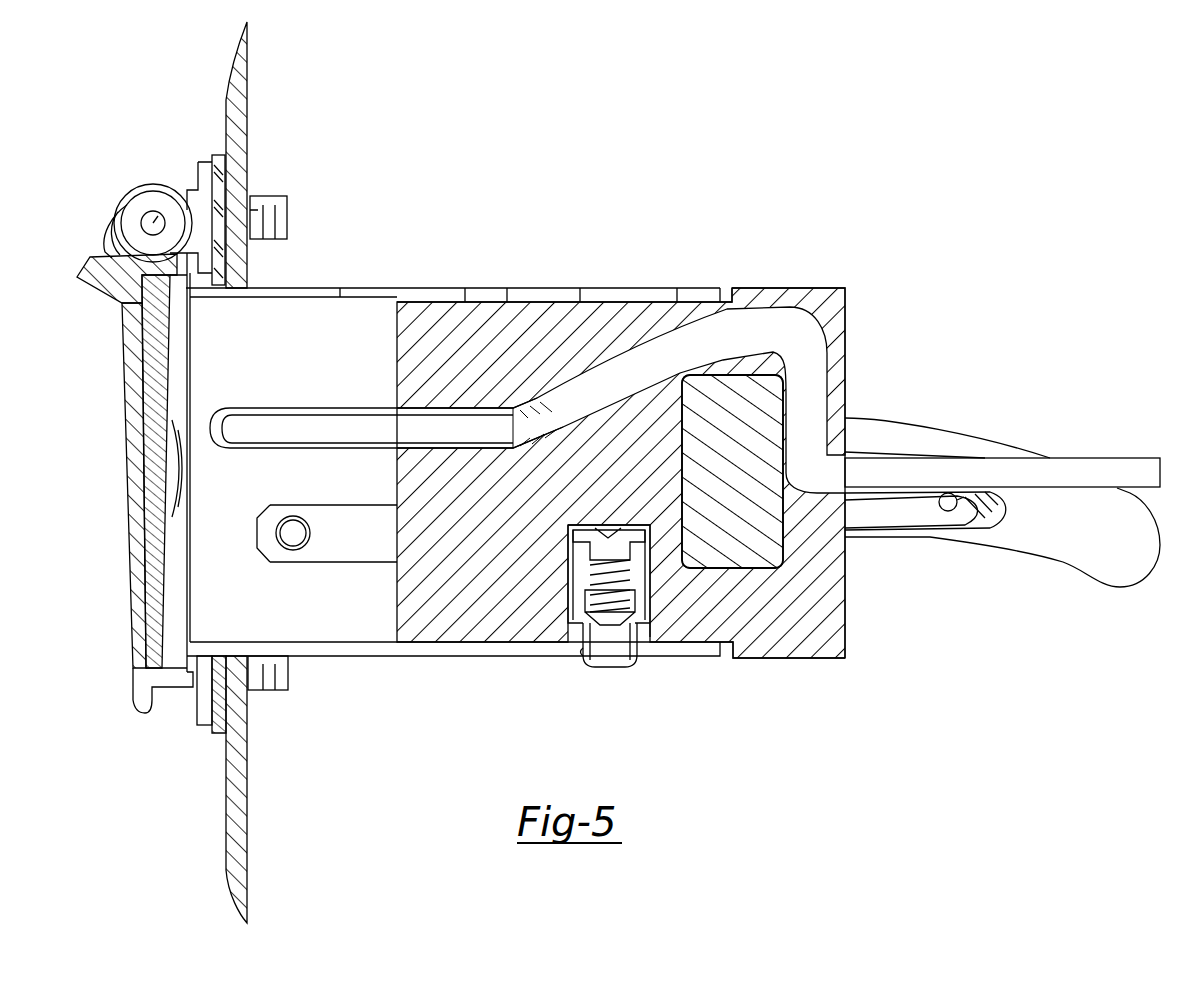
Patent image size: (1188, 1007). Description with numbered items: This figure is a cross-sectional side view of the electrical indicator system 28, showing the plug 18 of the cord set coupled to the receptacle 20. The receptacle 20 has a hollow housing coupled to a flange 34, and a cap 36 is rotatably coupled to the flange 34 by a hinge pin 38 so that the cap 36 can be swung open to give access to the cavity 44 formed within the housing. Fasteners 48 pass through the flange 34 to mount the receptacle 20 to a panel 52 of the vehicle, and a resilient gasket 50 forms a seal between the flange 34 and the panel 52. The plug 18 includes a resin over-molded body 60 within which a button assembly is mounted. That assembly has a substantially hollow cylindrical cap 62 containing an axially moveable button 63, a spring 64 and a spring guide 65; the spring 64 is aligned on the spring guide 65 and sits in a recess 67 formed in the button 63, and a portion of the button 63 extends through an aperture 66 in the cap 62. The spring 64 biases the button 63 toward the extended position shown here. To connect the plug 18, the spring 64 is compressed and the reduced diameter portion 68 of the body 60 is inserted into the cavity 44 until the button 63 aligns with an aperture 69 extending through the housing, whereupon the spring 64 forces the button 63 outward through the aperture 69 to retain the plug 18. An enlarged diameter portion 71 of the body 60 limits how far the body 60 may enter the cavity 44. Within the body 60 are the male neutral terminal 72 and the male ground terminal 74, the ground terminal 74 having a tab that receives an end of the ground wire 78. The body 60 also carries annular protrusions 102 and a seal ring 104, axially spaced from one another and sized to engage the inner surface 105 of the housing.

The plug 18 is at (862, 585).
The receptacle 20 is at (376, 266).
The electrical indicator system 28 is at (714, 138).
The flange 34 is at (205, 722).
The cap 36 is at (122, 565).
The hinge pin 38 is at (148, 229).
The cavity 44 is at (286, 368).
The fasteners 48 is at (287, 208).
The gasket 50 is at (212, 158).
The panel 52 is at (240, 120).
The body 60 is at (838, 648).
The cap 62 is at (655, 580).
The button 63 is at (604, 667).
The spring 64 is at (585, 575).
The spring guide 65 is at (598, 533).
The aperture 66 is at (633, 648).
The recess 67 is at (622, 608).
The reduced diameter portion 68 is at (580, 302).
The aperture 69 is at (586, 655).
The enlarged diameter portion 71 is at (787, 288).
The male neutral terminal 72 is at (282, 562).
The male ground terminal 74 is at (232, 450).
The ground wire 78 is at (420, 430).
The annular protrusions 102 is at (465, 288).
The seal ring 104 is at (507, 302).
The inner surface 105 is at (350, 297).